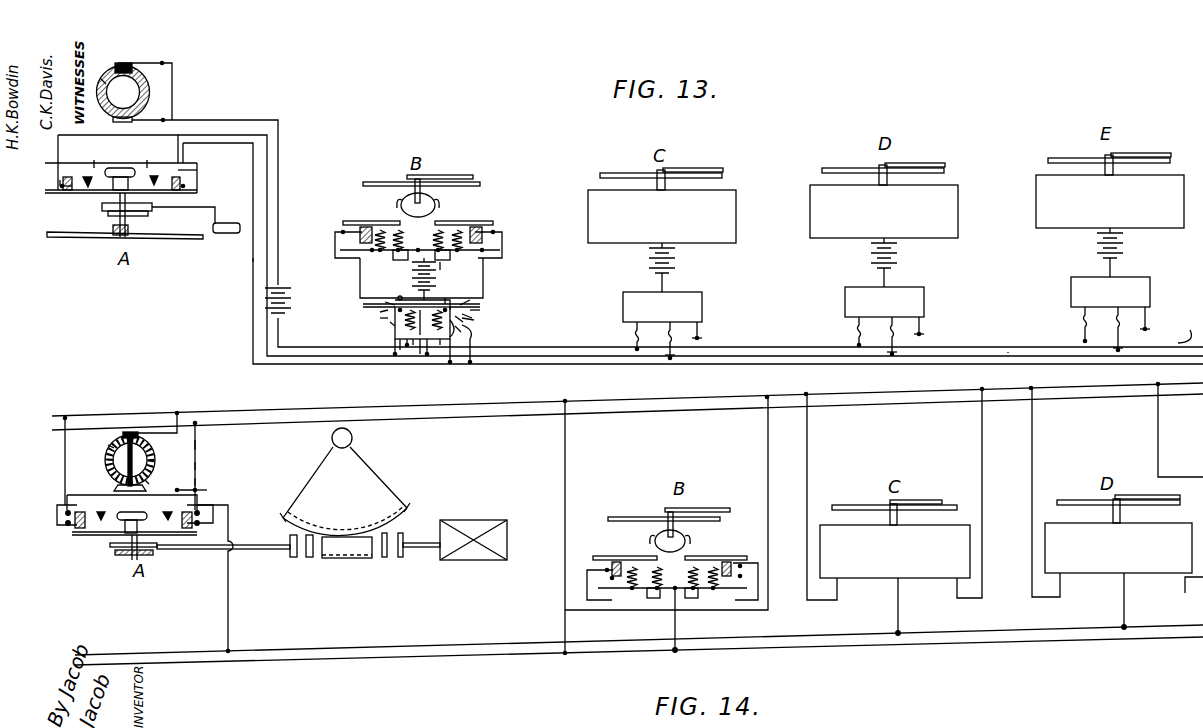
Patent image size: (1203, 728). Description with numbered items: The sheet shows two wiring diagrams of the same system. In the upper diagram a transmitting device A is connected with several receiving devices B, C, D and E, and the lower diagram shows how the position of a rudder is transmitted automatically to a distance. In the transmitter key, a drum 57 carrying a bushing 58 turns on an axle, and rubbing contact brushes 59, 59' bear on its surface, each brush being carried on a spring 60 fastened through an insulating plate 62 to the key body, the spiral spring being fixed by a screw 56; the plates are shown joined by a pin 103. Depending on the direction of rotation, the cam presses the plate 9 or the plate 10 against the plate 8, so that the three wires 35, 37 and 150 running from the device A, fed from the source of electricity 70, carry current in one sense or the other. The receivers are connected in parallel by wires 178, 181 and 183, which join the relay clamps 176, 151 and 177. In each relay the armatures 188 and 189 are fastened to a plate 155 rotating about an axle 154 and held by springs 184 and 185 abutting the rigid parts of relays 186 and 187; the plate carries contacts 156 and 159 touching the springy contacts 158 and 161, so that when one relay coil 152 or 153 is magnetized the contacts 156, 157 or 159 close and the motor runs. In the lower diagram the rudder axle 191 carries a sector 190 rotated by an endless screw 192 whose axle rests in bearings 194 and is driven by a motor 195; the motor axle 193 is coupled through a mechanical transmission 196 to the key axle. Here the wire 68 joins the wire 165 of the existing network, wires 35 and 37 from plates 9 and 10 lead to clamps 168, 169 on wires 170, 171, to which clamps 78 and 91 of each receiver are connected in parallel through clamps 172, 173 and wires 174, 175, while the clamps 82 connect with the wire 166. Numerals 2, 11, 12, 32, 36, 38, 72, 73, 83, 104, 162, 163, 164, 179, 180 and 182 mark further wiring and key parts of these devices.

In FIG. 13, the pivot 2 is at (118, 168).
In FIG. 14, the pivot 2 is at (118, 521).
In FIG. 13, the plate 8 is at (60, 199).
In FIG. 14, the plate 8 is at (205, 525).
In FIG. 13, the plate 9 is at (60, 180).
In FIG. 14, the plate 9 is at (84, 510).
In FIG. 13, the plate 10 is at (182, 177).
In FIG. 14, the plate 10 is at (173, 510).
In FIG. 13, the insulating block 11 is at (88, 191).
In FIG. 14, the insulating block 11 is at (180, 533).
In FIG. 13, the contact point 12 is at (86, 178).
In FIG. 14, the contact point 12 is at (165, 512).
In FIG. 13, the conductor 32 is at (1166, 347).
In FIG. 13, the wire 35 is at (1165, 332).
In FIG. 13, the conductor 36 is at (280, 236).
In FIG. 13, the wire 37 is at (268, 165).
In FIG. 14, the wire 37 is at (198, 467).
In FIG. 13, the contact spring 38 is at (147, 162).
In FIG. 13, the screw 56 is at (105, 78).
In FIG. 13, the drum 57 is at (115, 66).
In FIG. 14, the drum 57 is at (108, 460).
In FIG. 13, the bushing 58 is at (135, 92).
In FIG. 14, the bushing 58 is at (142, 458).
In FIG. 13, the rubbing contact brush 59 is at (144, 74).
In FIG. 14, the rubbing contact brush 59 is at (94, 441).
In FIG. 13, the rubbing contact brush 59' is at (107, 121).
In FIG. 14, the rubbing contact brush 59' is at (109, 479).
In FIG. 13, the spring 60 is at (163, 120).
In FIG. 14, the spring 60 is at (133, 432).
In FIG. 14, the insulating plate 62 is at (212, 452).
In FIG. 14, the wire 68 is at (198, 482).
In FIG. 13, the source of electricity 70 is at (292, 302).
In FIG. 14, the conductor 72 is at (205, 489).
In FIG. 14, the conductor 73 is at (205, 501).
In FIG. 13, the clamp 78 is at (470, 355).
In FIG. 14, the clamp 78 is at (733, 598).
In FIG. 13, the clamp 82 is at (418, 213).
In FIG. 14, the clamp 82 is at (670, 547).
In FIG. 13, the conductor 83 is at (407, 267).
In FIG. 14, the conductor 83 is at (1125, 607).
In FIG. 13, the clamp 91 is at (358, 258).
In FIG. 14, the clamp 91 is at (610, 602).
In FIG. 14, the pin 103 is at (134, 460).
In FIG. 14, the conductor 104 is at (177, 413).
In FIG. 13, the wire 150 is at (1010, 352).
In FIG. 13, the clamp 151 is at (435, 347).
In FIG. 13, the relay coil 152 is at (442, 346).
In FIG. 13, the relay coil 153 is at (413, 346).
In FIG. 13, the axle 154 is at (453, 285).
In FIG. 13, the plate 155 is at (380, 306).
In FIG. 13, the contact 156 is at (460, 318).
In FIG. 13, the contact 157 is at (467, 266).
In FIG. 13, the springy contact 158 is at (460, 305).
In FIG. 13, the contact 159 is at (390, 305).
In FIG. 13, the springy contact 161 is at (401, 288).
In FIG. 13, the conductor 162 is at (440, 278).
In FIG. 14, the conductor 162 is at (1122, 635).
In FIG. 13, the casing 163 is at (483, 275).
In FIG. 13, the casing 164 is at (360, 278).
In FIG. 14, the wire 165 is at (404, 645).
In FIG. 14, the wire 166 is at (447, 656).
In FIG. 14, the clamp 168 is at (197, 430).
In FIG. 14, the clamp 169 is at (85, 405).
In FIG. 14, the wire 170 is at (541, 415).
In FIG. 14, the wire 171 is at (545, 403).
In FIG. 14, the clamp 172 is at (1155, 390).
In FIG. 14, the clamp 173 is at (1032, 388).
In FIG. 14, the wire 174 is at (1160, 468).
In FIG. 14, the wire 175 is at (1033, 455).
In FIG. 13, the clamp 176 is at (450, 337).
In FIG. 13, the clamp 177 is at (407, 346).
In FIG. 13, the wire 178 is at (1146, 330).
In FIG. 13, the conductor 179 is at (483, 371).
In FIG. 13, the conductor 180 is at (438, 371).
In FIG. 13, the wire 181 is at (433, 363).
In FIG. 13, the conductor 182 is at (366, 370).
In FIG. 13, the wire 183 is at (356, 365).
In FIG. 13, the spring 184 is at (480, 310).
In FIG. 13, the spring 185 is at (385, 312).
In FIG. 13, the relay 186 is at (478, 316).
In FIG. 13, the relay 187 is at (385, 318).
In FIG. 13, the armature 188 is at (395, 325).
In FIG. 13, the armature 189 is at (455, 330).
In FIG. 14, the sector 190 is at (345, 491).
In FIG. 14, the axle of a rudder 191 is at (352, 438).
In FIG. 14, the endless screw 192 is at (343, 561).
In FIG. 14, the axle 193 is at (410, 558).
In FIG. 14, the bearing 194 is at (400, 532).
In FIG. 14, the motor 195 is at (487, 517).
In FIG. 14, the mechanical transmission 196 is at (118, 560).